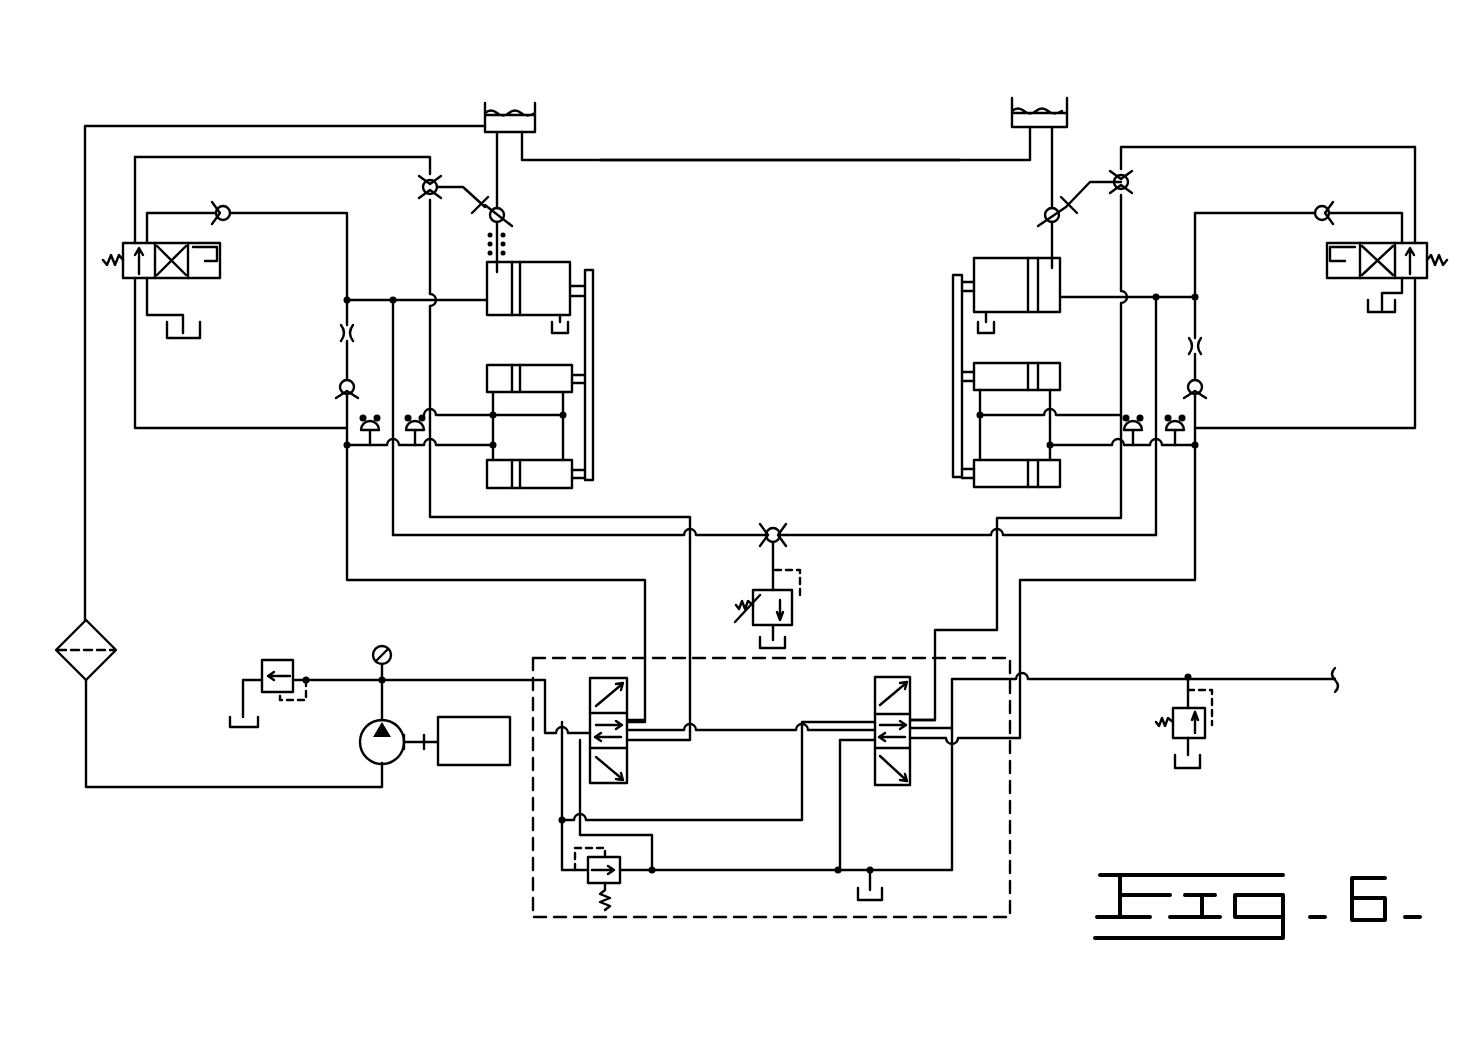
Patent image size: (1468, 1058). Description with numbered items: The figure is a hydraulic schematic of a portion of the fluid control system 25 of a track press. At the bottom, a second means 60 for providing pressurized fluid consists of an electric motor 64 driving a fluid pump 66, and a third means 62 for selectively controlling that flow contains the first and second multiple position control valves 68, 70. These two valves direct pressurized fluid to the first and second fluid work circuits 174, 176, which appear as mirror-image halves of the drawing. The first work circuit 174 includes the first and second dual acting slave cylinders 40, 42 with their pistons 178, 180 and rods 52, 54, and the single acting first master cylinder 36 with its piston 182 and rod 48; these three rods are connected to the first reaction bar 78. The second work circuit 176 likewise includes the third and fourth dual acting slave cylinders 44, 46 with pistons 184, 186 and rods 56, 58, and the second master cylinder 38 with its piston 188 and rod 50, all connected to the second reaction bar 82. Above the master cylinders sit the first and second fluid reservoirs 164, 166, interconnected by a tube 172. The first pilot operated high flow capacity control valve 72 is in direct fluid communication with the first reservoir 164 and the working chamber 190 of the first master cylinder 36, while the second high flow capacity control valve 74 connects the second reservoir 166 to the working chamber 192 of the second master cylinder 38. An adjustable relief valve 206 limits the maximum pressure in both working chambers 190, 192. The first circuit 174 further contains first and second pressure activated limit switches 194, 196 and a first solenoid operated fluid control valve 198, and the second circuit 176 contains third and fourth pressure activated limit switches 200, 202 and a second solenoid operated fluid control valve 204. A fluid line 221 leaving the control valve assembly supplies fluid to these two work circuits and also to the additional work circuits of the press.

The fluid control system 25 is at (300, 100).
The first fluid master cylinder 36 is at (974, 268).
The second fluid master cylinder 38 is at (572, 264).
The first fluid slave cylinder 40 is at (995, 488).
The second fluid slave cylinder 42 is at (1048, 368).
The third fluid slave cylinder 44 is at (548, 490).
The fourth fluid slave cylinder 46 is at (490, 372).
The reciprocatable rod 48 is at (1003, 290).
The reciprocatable rod 50 is at (590, 300).
The reciprocatable rod 52 is at (1012, 488).
The reciprocatable rod 54 is at (992, 388).
The reciprocatable rod 56 is at (580, 469).
The reciprocatable rod 58 is at (578, 385).
The second means 60 is at (458, 820).
The third means 62 is at (980, 752).
The electric motor 64 is at (475, 766).
The fluid pump 66 is at (360, 738).
The first multiple position control valve 68 is at (875, 690).
The second multiple position control valve 70 is at (612, 783).
The first pilot operated high flow capacity control valve 72 is at (1040, 210).
The second pilot operated high flow capacity control valve 74 is at (512, 208).
The first reaction bar 78 is at (953, 350).
The second reaction bar 82 is at (594, 344).
The first fluid reservoir 164 is at (1067, 112).
The second fluid reservoir 166 is at (485, 112).
The tube 172 is at (775, 160).
The first fluid work circuit 174 is at (1268, 450).
The second fluid work circuit 176 is at (322, 462).
The piston 178 is at (1035, 465).
The piston 180 is at (1032, 380).
The piston 182 is at (1036, 305).
The piston 184 is at (510, 470).
The piston 186 is at (497, 394).
The piston 188 is at (515, 318).
The working chamber 190 is at (1040, 270).
The working chamber 192 is at (490, 275).
The first pressure activated limit switch 194 is at (1150, 450).
The second pressure activated limit switch 196 is at (1183, 425).
The first solenoid operated fluid control valve 198 is at (1337, 266).
The third pressure activated limit switch 200 is at (430, 405).
The fourth pressure activated limit switch 202 is at (345, 420).
The second solenoid operated fluid control valve 204 is at (200, 272).
The adjustable relief valve 206 is at (793, 615).
The fluid line 221 is at (1290, 677).